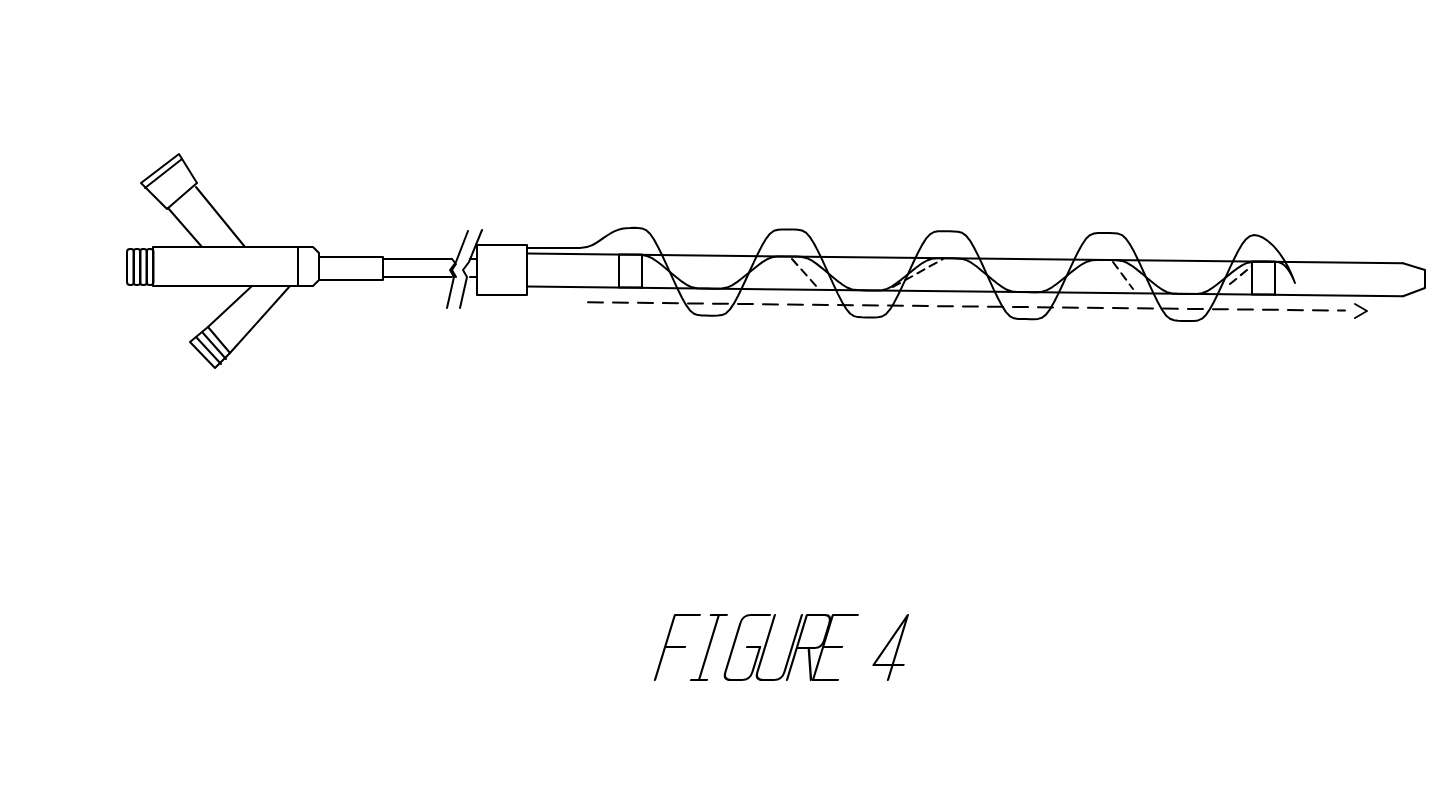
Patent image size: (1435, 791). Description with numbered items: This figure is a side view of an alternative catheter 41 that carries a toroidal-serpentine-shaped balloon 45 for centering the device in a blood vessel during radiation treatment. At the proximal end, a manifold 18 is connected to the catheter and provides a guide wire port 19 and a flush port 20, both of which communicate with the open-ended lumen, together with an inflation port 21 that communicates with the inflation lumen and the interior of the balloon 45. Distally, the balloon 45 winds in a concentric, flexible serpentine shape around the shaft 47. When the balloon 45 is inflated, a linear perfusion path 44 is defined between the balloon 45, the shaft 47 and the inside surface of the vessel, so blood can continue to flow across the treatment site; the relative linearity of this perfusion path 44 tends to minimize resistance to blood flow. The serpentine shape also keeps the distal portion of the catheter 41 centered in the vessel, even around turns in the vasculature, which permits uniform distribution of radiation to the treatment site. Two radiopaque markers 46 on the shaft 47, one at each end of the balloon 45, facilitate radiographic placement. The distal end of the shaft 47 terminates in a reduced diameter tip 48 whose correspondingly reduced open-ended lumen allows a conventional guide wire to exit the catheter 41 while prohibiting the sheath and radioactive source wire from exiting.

The manifold 18 is at (284, 201).
The guide wire port 19 is at (162, 287).
The flush port 20 is at (205, 193).
The inflation port 21 is at (250, 327).
The alternative catheter 41 is at (843, 119).
The linear perfusion path 44 is at (1322, 312).
The toroidal-serpentine-shaped balloon 45 is at (1108, 233).
The radiopaque markers 46 is at (630, 288).
The shaft 47 is at (945, 292).
The reduced diameter tip 48 is at (1415, 262).